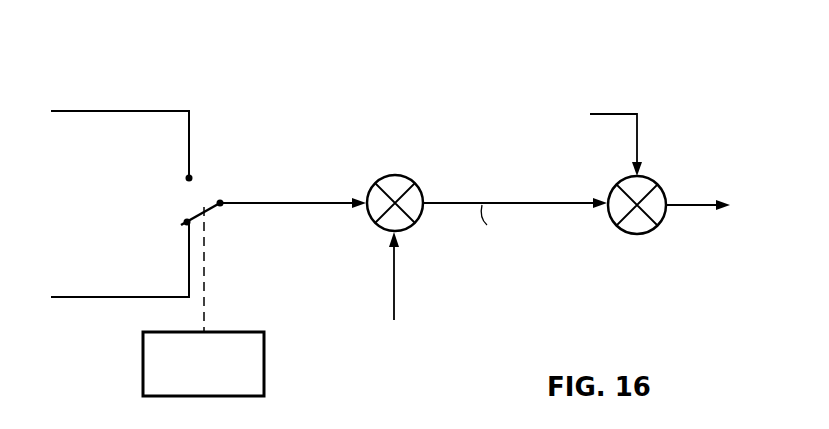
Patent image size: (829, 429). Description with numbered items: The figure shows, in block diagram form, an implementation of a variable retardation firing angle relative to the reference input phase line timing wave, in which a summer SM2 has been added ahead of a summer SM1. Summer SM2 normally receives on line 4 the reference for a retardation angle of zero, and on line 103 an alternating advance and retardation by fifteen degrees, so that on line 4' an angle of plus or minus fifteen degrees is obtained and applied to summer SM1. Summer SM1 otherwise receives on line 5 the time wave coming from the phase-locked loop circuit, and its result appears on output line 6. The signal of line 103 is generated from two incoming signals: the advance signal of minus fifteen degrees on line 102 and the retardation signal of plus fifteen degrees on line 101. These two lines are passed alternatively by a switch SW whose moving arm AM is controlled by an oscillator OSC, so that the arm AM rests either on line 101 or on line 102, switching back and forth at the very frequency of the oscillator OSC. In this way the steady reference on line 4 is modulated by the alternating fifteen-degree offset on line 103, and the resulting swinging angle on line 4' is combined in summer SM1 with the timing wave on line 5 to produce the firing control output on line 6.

The line 101 is at (167, 112).
The line 102 is at (122, 297).
The line 103 is at (265, 203).
The switch SW is at (229, 187).
The moving arm AM is at (196, 216).
The oscillator OSC is at (264, 384).
The summer SM2 is at (402, 175).
The line 4 is at (417, 286).
The line 4' is at (515, 205).
The line 5 is at (617, 113).
The summer SM1 is at (628, 236).
The line 6 is at (680, 205).